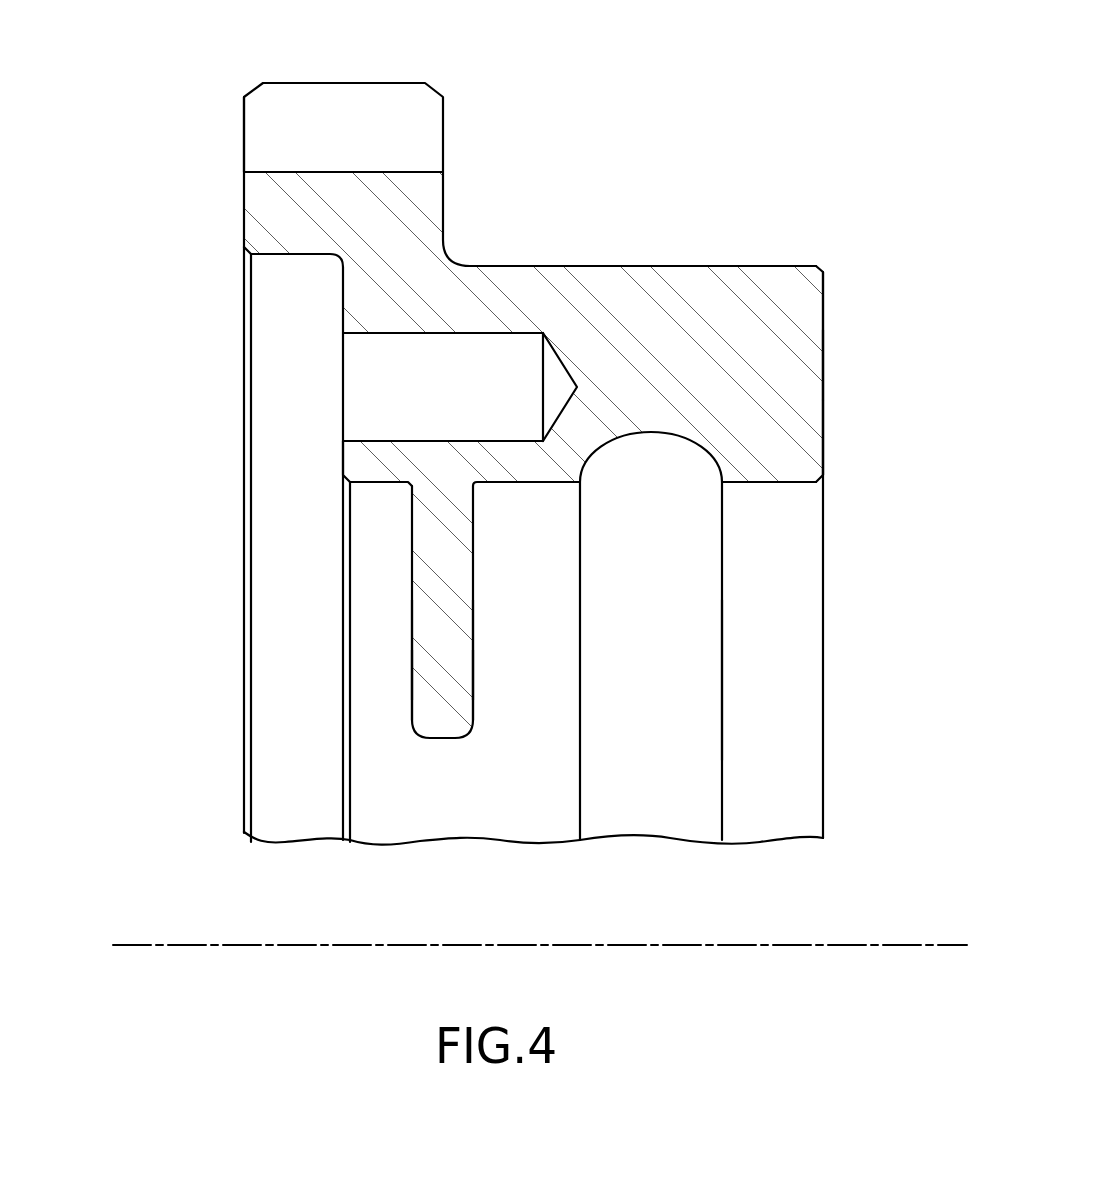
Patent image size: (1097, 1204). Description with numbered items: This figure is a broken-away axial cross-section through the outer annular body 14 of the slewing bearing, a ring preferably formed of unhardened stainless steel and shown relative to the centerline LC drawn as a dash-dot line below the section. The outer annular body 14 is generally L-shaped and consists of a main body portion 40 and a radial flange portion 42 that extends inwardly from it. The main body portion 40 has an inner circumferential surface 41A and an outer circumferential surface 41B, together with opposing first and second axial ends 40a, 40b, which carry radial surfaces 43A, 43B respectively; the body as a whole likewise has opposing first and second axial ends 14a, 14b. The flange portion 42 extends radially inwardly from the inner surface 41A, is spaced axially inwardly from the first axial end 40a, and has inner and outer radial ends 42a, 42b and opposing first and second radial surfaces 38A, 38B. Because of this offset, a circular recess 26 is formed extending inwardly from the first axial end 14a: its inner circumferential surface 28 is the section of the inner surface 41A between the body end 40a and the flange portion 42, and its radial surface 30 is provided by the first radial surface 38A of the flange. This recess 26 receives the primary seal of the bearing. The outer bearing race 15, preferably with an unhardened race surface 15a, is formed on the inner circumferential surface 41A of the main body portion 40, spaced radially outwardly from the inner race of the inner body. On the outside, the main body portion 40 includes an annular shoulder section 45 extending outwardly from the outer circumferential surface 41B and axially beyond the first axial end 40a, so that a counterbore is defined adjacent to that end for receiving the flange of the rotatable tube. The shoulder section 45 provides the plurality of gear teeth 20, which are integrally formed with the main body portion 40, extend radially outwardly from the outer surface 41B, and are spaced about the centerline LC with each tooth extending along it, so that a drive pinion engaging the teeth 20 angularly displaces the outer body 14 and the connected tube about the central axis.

The outer annular body 14 is at (147, 233).
The first axial end 14a is at (329, 289).
The second axial end 14b is at (846, 312).
The outer bearing race 15 is at (724, 612).
The race surface 15a is at (695, 656).
The gear teeth 20 is at (380, 80).
The circular recess 26 is at (385, 551).
The inner circumferential surface 28 is at (362, 494).
The radial surface 30 is at (395, 641).
The first radial surface 38A is at (412, 580).
The second radial surface 38B is at (474, 598).
The main body portion 40 is at (779, 226).
The first axial end 40a is at (343, 457).
The second axial end 40b is at (823, 375).
The inner circumferential surface 41A is at (763, 483).
The outer circumferential surface 41B is at (632, 266).
The radial flange portion 42 is at (388, 690).
The inner radial end 42a is at (440, 738).
The outer radial end 42b is at (457, 486).
The radial surface 43A is at (343, 320).
The radial surface 43B is at (823, 418).
The annular shoulder section 45 is at (254, 189).
The centerline LC is at (950, 945).